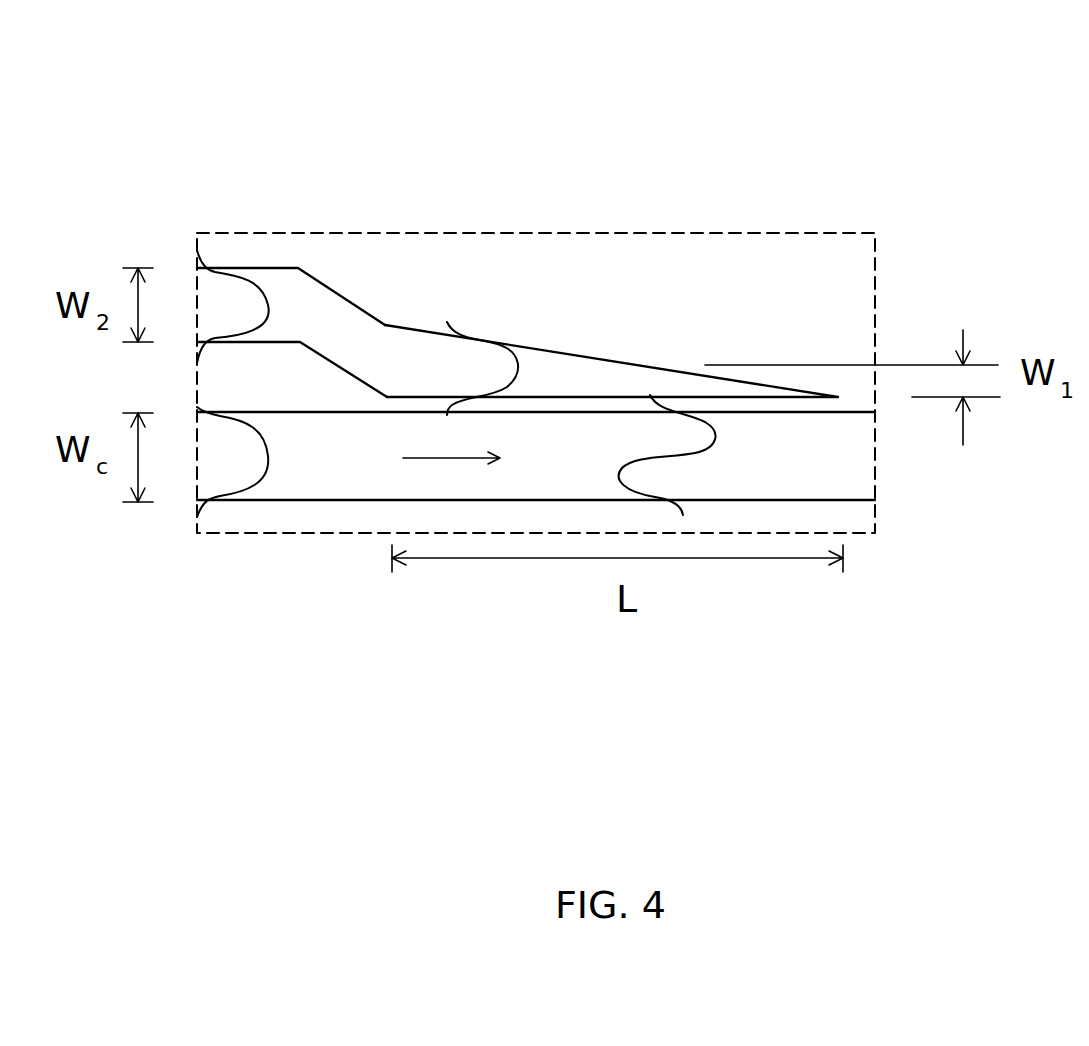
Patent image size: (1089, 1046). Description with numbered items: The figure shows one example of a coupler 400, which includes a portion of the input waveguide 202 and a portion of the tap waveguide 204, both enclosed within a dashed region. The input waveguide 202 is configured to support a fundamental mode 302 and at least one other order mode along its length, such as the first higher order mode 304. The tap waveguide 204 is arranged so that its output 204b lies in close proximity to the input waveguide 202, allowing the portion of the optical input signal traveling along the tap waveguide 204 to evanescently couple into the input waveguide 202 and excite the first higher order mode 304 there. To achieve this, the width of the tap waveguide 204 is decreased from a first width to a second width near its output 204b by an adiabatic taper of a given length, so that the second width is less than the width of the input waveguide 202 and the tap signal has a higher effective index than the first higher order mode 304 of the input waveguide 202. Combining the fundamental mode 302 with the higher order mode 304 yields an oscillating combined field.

The coupler 400 is at (827, 232).
The tap waveguide 204 is at (318, 285).
The output of the tap waveguide 204b is at (596, 398).
The input waveguide 202 is at (320, 500).
The fundamental mode 302 is at (520, 360).
The first higher order mode 304 is at (665, 453).